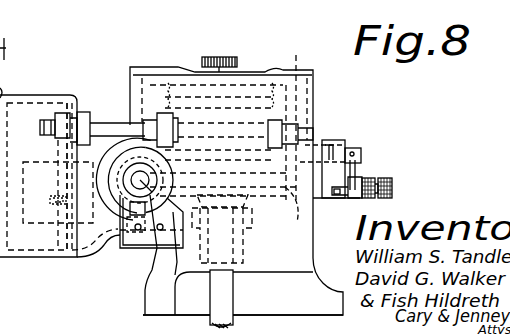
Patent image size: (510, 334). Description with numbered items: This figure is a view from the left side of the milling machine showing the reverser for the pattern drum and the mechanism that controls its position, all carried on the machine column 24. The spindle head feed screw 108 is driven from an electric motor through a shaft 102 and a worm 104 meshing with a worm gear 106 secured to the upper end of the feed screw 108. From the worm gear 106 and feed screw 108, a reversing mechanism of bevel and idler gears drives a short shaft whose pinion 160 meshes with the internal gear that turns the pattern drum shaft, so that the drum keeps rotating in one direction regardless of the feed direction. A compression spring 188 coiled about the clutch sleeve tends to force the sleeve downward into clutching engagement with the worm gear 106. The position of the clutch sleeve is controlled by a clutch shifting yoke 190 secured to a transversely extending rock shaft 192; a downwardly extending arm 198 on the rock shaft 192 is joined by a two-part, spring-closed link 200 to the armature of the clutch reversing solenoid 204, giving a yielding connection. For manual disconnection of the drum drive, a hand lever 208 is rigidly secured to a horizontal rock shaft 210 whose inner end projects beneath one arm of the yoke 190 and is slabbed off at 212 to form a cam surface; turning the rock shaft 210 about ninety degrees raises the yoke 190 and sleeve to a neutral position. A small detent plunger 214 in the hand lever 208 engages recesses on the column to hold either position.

The machine column 24 is at (145, 300).
The shaft 102 is at (157, 252).
The worm 104 is at (173, 183).
The worm gear 106 is at (300, 216).
The spindle head feed screw 108 is at (230, 300).
The pinion 160 is at (238, 56).
The compression spring 188 is at (150, 85).
The clutch shifting yoke 190 is at (293, 115).
The rock shaft 192 is at (108, 127).
The downwardly extending arm 198 is at (60, 133).
The link 200 is at (52, 212).
The clutch reversing solenoid 204 is at (68, 262).
The hand lever 208 is at (353, 172).
The rock shaft 210 is at (358, 157).
The slabbed-off portion 212 is at (298, 152).
The detent plunger 214 is at (343, 198).